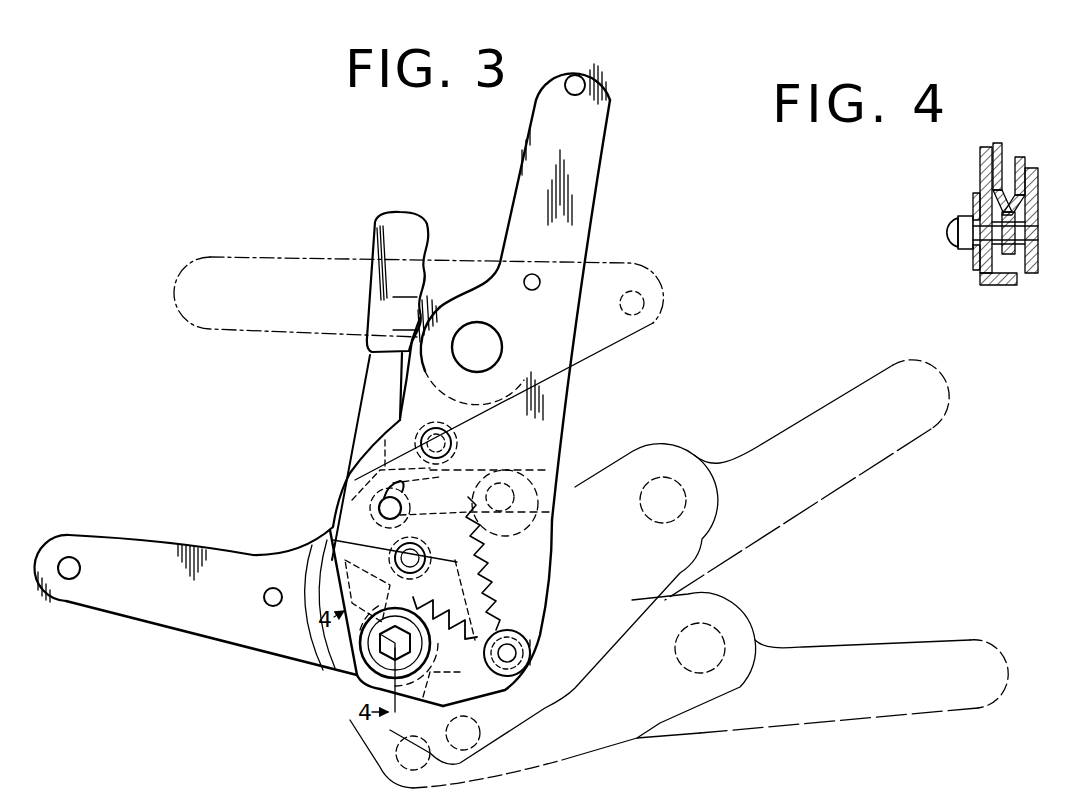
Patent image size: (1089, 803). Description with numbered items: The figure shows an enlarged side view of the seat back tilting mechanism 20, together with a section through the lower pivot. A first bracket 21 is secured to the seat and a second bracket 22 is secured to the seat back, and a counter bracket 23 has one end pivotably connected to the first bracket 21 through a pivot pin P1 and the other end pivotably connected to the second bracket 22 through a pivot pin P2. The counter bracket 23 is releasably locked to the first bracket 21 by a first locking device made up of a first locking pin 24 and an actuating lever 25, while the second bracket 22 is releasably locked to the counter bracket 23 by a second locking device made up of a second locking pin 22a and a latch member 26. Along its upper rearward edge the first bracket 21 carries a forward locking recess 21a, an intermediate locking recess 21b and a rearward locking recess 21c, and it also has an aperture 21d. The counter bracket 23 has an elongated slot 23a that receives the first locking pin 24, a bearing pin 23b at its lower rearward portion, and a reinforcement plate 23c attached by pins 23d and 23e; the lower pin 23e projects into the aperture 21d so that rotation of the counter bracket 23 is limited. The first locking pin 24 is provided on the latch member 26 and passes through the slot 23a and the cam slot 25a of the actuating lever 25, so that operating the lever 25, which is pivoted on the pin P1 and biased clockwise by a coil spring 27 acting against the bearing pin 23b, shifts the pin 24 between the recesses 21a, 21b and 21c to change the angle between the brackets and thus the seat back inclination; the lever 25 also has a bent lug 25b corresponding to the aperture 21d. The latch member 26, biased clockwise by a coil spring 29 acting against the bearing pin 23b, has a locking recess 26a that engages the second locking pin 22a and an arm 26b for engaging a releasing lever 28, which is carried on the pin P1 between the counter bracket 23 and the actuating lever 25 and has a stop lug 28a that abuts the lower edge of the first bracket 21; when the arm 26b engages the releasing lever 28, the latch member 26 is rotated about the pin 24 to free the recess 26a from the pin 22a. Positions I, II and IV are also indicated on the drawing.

In FIG. 3, the tilting mechanism 20 is at (280, 448).
In FIG. 3, the first bracket 21 is at (112, 607).
In FIG. 4, the first bracket 21 is at (1038, 181).
In FIG. 3, the forward locking recess 21a is at (378, 493).
In FIG. 3, the intermediate locking recess 21b is at (510, 548).
In FIG. 3, the rearward locking recess 21c is at (520, 625).
In FIG. 3, the aperture 21d is at (505, 572).
In FIG. 3, the second bracket 22 is at (604, 120).
In FIG. 3, the second locking pin 22a is at (552, 513).
In FIG. 3, the counter bracket 23 is at (535, 390).
In FIG. 4, the counter bracket 23 is at (978, 172).
In FIG. 3, the elongated slot 23a is at (378, 475).
In FIG. 3, the bearing pin 23b is at (535, 652).
In FIG. 3, the reinforcement plate 23c is at (403, 447).
In FIG. 3, the pin 23d is at (448, 430).
In FIG. 3, the pin 23e is at (335, 533).
In FIG. 3, the first locking pin 24 is at (378, 509).
In FIG. 3, the actuating lever 25 is at (366, 372).
In FIG. 4, the actuating lever 25 is at (1030, 162).
In FIG. 3, the cam slot 25a is at (462, 462).
In FIG. 3, the lug 25b is at (306, 617).
In FIG. 3, the latch member 26 is at (548, 432).
In FIG. 3, the locking recess 26a is at (548, 478).
In FIG. 3, the arm 26b is at (302, 578).
In FIG. 3, the coil spring 27 is at (507, 678).
In FIG. 3, the releasing lever 28 is at (330, 653).
In FIG. 4, the releasing lever 28 is at (1000, 145).
In FIG. 3, the stop lug 28a is at (423, 697).
In FIG. 3, the coil spring 29 is at (500, 593).
In FIG. 3, the pivot pin P1 is at (367, 667).
In FIG. 4, the pivot pin P1 is at (1038, 222).
In FIG. 3, the pivot pin P2 is at (483, 345).
In FIG. 3, the seat position I is at (860, 465).
In FIG. 3, the seat position II is at (942, 645).
In FIG. 3, the lever position IV is at (248, 253).